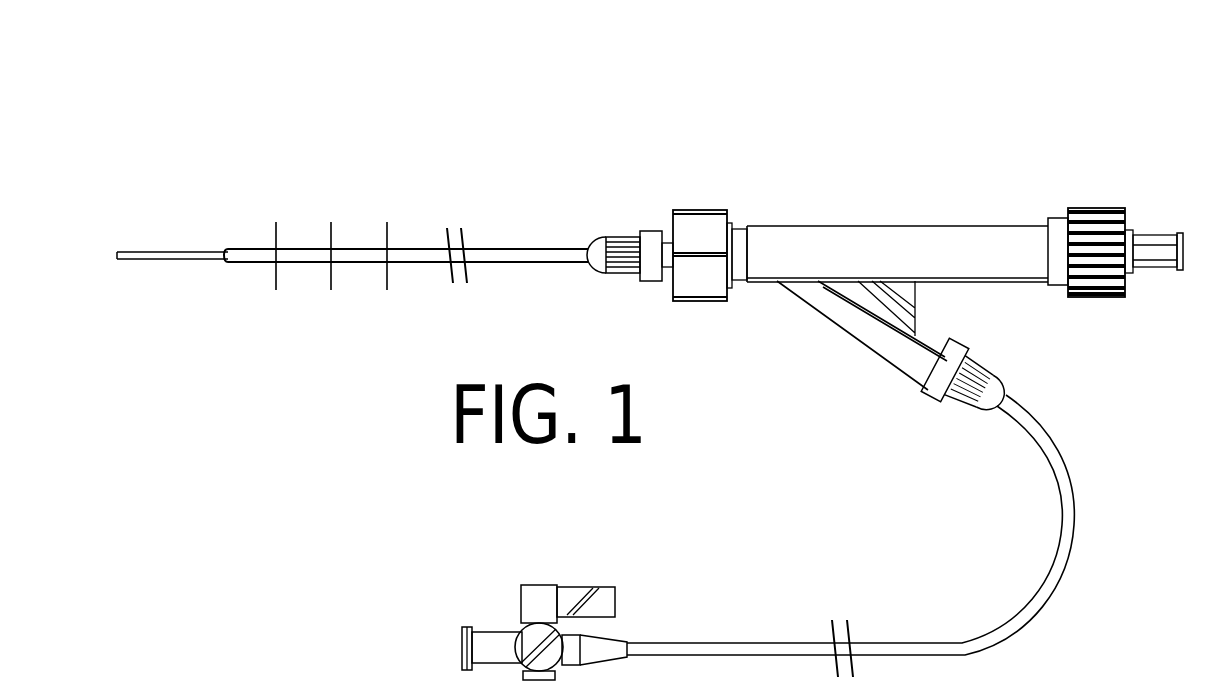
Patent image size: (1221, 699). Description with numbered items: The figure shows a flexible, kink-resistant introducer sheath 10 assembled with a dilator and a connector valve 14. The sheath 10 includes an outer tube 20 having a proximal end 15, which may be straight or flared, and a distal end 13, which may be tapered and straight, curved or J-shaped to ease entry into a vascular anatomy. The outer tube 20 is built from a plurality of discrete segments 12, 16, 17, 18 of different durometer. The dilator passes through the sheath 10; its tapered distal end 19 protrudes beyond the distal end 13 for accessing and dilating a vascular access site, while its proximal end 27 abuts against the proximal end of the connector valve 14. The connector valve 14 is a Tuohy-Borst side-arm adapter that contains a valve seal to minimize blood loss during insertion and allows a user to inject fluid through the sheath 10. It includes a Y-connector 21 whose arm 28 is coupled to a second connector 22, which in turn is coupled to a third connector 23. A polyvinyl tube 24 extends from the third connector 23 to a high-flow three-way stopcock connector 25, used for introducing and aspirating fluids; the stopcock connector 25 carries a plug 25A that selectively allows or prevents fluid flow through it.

The introducer sheath 10 is at (273, 210).
The discrete segment 12 is at (420, 253).
The distal end 13 is at (315, 217).
The connector valve 14 is at (898, 225).
The proximal end 15 is at (588, 247).
The discrete segment 16 is at (358, 258).
The discrete segment 17 is at (308, 256).
The discrete segment 18 is at (257, 256).
The distal end 19 is at (170, 250).
The outer tube 20 is at (405, 253).
The Y-connector 21 is at (748, 228).
The second connector 22 is at (933, 390).
The third connector 23 is at (1010, 385).
The polyvinyl tube 24 is at (733, 642).
The high-flow three-way stopcock connector 25 is at (490, 632).
The plug 25A is at (528, 640).
The proximal end 27 is at (1162, 235).
The arm 28 is at (852, 332).